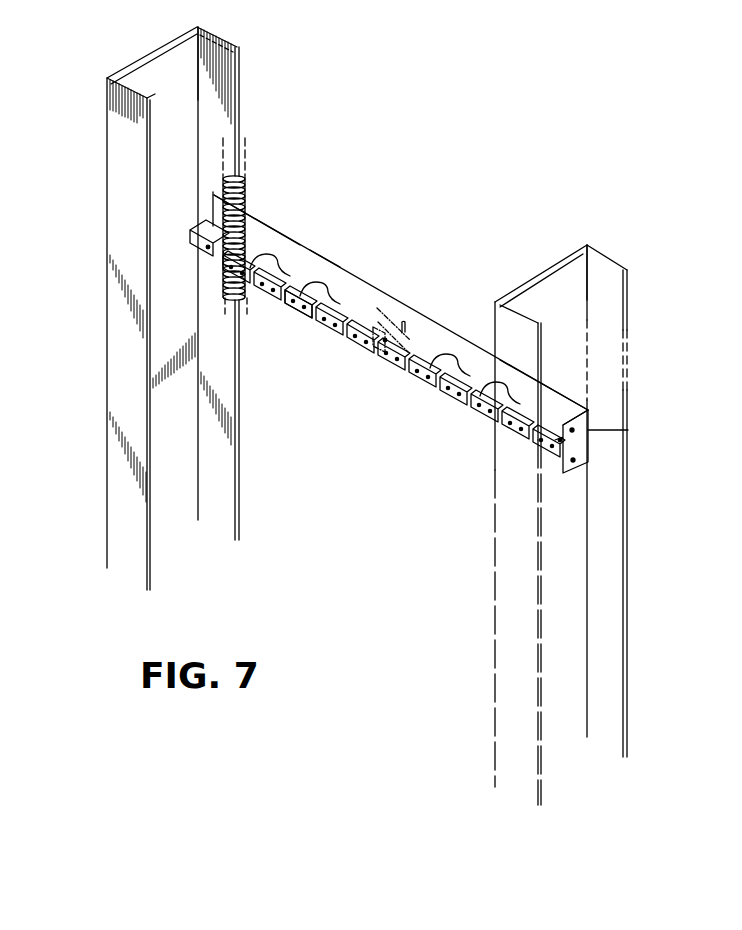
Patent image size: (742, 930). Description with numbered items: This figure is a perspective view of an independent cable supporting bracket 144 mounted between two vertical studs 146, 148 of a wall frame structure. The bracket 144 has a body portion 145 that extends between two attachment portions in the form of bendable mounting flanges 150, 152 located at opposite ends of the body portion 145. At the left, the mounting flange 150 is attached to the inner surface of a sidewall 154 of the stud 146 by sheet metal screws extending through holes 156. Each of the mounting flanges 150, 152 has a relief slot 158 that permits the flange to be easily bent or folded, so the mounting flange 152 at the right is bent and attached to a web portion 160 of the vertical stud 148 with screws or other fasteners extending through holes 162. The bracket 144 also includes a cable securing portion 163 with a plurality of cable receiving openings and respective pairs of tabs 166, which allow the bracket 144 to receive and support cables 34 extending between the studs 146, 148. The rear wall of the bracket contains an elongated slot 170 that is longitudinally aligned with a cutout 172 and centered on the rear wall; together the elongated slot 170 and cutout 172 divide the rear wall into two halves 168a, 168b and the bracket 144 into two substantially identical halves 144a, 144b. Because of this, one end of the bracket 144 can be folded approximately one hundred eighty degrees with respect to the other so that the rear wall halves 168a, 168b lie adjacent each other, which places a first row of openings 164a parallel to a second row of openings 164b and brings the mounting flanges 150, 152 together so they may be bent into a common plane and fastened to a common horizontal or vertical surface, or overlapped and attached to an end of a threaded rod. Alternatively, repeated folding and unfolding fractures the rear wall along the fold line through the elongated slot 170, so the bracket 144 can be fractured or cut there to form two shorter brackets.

The cables 34 is at (247, 188).
The cable supporting bracket 144 is at (330, 232).
The first bracket half 144a is at (256, 221).
The second bracket half 144b is at (438, 322).
The body portion 145 is at (376, 258).
The vertical stud 146 is at (240, 92).
The vertical stud 148 is at (628, 293).
The mounting flange 150 is at (214, 197).
The mounting flange 152 is at (578, 473).
The sidewall 154 is at (218, 91).
The holes 156 is at (217, 210).
The relief slot 158 is at (628, 430).
The web portion 160 is at (545, 272).
The holes 162 is at (572, 428).
The cable securing portion 163 is at (323, 268).
The first row of openings 164a is at (292, 262).
The second row of openings 164b is at (452, 388).
The pairs of tabs 166 is at (297, 281).
The rear wall half 168a is at (385, 340).
The rear wall half 168b is at (560, 440).
The elongated slot 170 is at (385, 318).
The cutout 172 is at (428, 343).